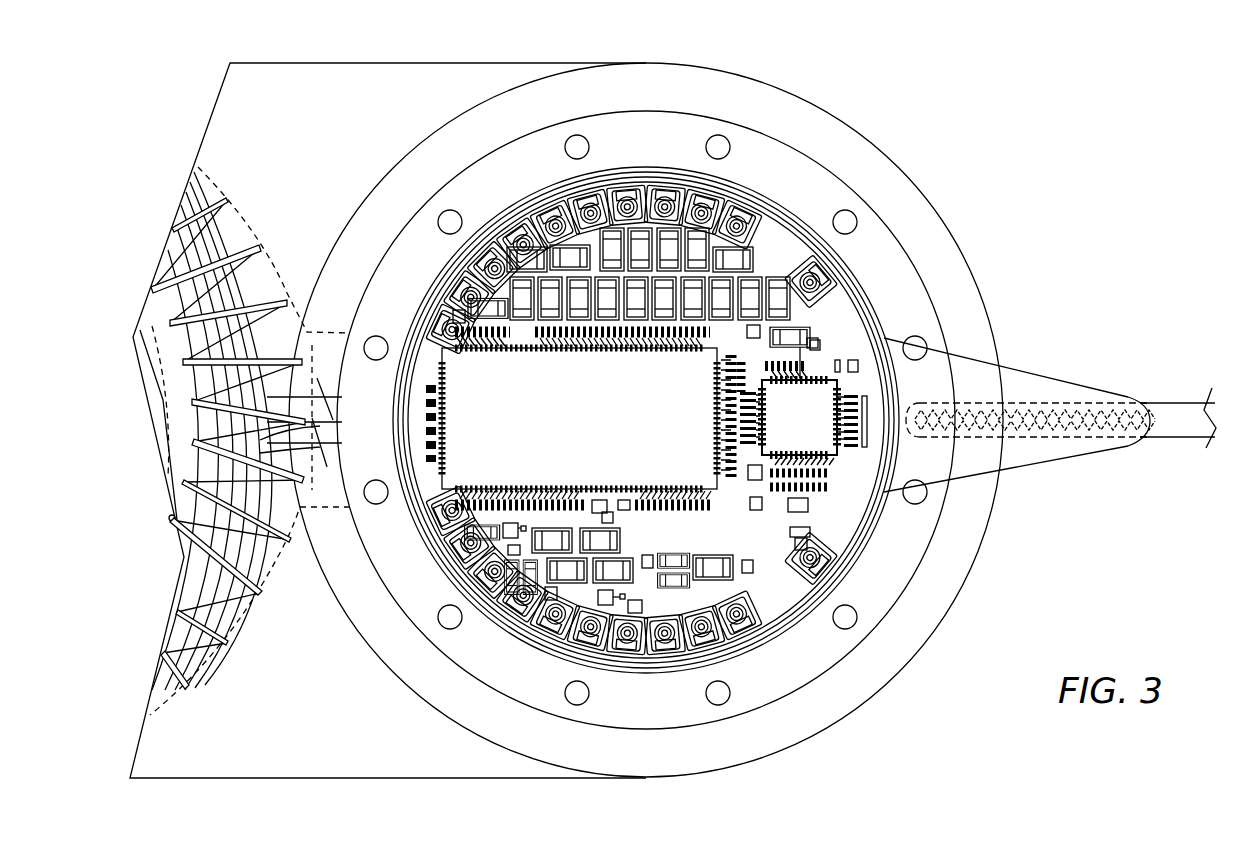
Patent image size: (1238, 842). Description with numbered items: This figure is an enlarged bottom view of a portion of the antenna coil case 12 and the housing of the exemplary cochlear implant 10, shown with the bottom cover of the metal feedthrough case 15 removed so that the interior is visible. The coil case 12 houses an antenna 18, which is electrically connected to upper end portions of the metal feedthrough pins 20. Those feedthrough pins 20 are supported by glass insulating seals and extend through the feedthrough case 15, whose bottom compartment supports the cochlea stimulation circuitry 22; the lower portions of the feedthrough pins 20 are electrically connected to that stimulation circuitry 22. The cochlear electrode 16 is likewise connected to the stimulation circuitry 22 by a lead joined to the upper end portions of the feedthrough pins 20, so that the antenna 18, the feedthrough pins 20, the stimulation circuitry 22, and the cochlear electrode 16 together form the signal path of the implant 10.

The cochlear implant 10 is at (1084, 246).
The antenna coil case 12 is at (248, 224).
The metal feedthrough case 15 is at (437, 188).
The cochlear electrode 16 is at (1178, 400).
The antenna 18 is at (275, 298).
The feedthrough pins 20 is at (592, 628).
The cochlea stimulation circuitry 22 is at (578, 246).